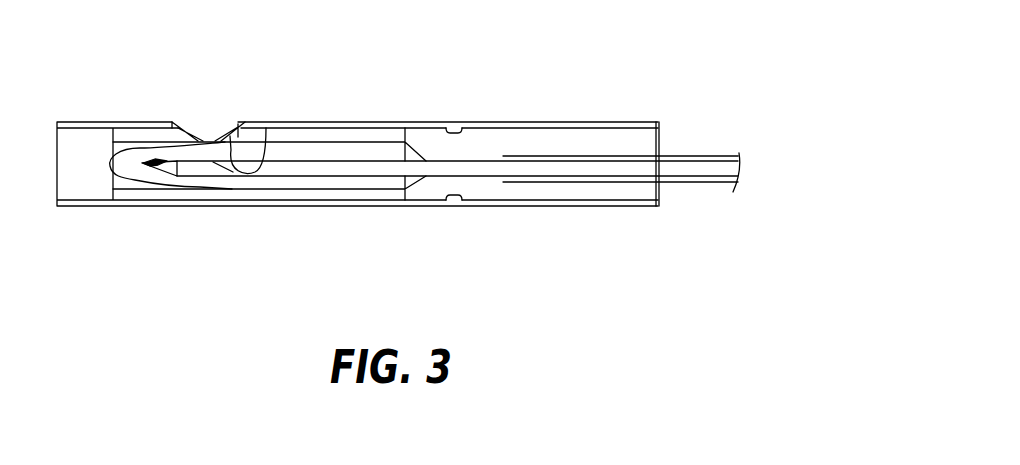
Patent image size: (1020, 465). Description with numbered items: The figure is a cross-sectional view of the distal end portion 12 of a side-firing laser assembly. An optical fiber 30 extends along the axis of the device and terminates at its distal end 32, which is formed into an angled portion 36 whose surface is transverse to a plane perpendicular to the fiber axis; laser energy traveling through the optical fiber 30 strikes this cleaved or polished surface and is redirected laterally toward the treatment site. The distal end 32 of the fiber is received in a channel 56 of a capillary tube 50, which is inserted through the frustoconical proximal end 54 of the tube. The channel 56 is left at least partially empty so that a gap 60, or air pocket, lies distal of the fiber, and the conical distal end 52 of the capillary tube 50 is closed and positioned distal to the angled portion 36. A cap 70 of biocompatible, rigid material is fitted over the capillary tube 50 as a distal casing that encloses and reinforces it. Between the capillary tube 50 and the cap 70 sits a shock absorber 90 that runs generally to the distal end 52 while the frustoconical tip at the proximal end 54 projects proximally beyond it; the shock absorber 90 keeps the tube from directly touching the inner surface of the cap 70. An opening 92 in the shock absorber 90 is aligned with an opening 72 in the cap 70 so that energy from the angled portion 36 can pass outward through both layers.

The distal end portion 12 is at (569, 80).
The optical fiber 30 is at (468, 170).
The distal end 32 is at (266, 128).
The angled portion 36 is at (262, 128).
The capillary tube 50 is at (353, 140).
The distal end 52 is at (124, 172).
The proximal end 54 is at (413, 178).
The channel 56 is at (201, 174).
The gap 60 is at (150, 170).
The cap 70 is at (134, 123).
The opening 72 is at (227, 137).
The shock absorber 90 is at (319, 199).
The opening 92 is at (202, 141).